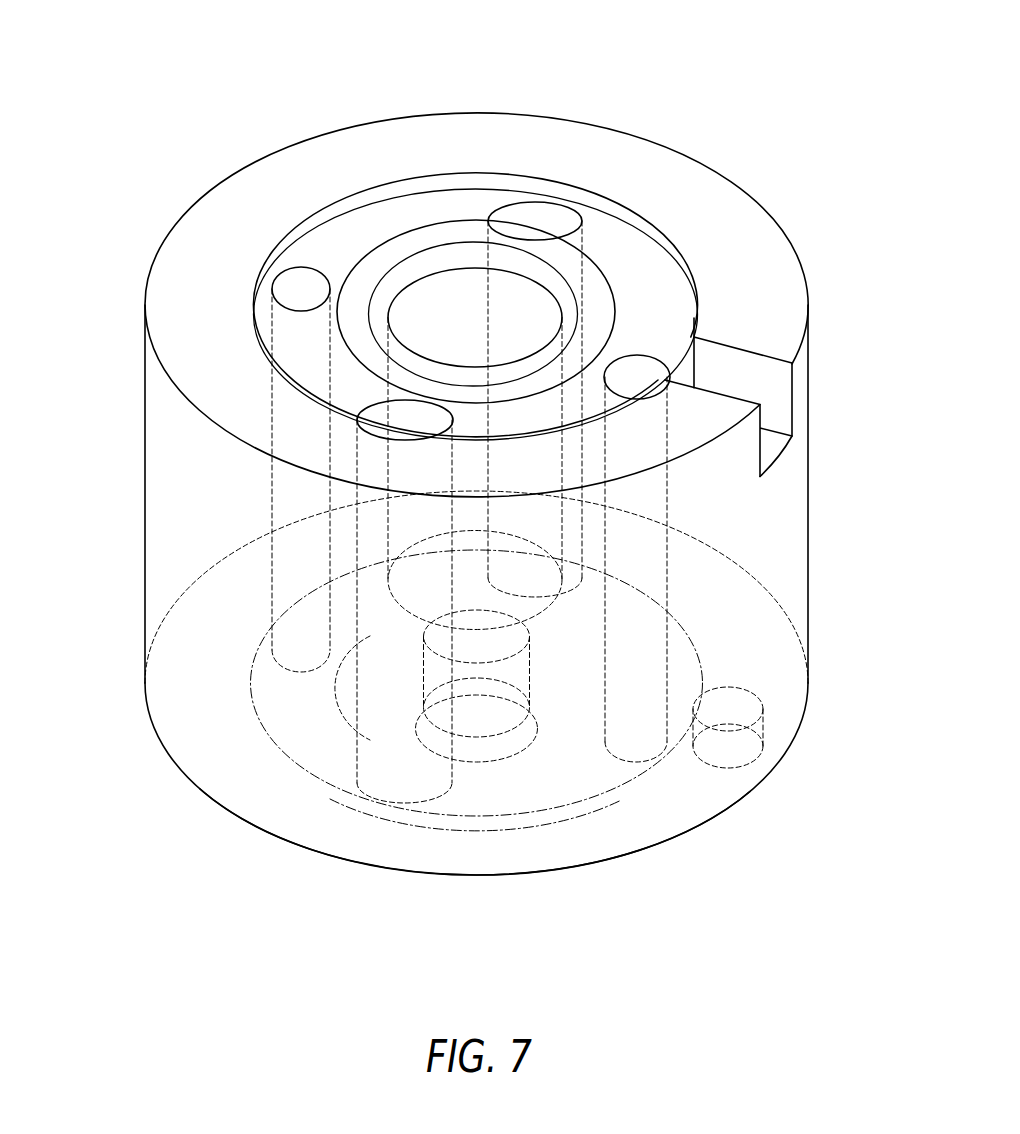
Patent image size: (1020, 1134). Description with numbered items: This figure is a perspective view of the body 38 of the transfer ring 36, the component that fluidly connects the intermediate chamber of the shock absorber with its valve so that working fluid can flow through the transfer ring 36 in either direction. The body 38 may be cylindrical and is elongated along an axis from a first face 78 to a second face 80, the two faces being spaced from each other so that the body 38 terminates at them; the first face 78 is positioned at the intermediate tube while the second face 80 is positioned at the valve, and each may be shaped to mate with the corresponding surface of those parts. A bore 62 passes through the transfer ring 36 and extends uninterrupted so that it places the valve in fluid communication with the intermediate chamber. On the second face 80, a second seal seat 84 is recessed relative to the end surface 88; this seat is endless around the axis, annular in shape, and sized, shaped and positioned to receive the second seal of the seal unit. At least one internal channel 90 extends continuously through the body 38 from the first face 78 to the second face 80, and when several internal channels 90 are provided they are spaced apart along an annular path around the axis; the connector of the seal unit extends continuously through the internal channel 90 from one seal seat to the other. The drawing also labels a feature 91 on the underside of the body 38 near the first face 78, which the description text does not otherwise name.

The transfer ring 36 is at (782, 172).
The body 38 is at (147, 375).
The bore 62 is at (428, 298).
The first face 78 is at (335, 878).
The second face 80 is at (575, 78).
The second seal seat 84 is at (335, 247).
The end surface 88 is at (605, 155).
The internal channel 90 is at (353, 623).
The bottom recess 91 is at (297, 767).